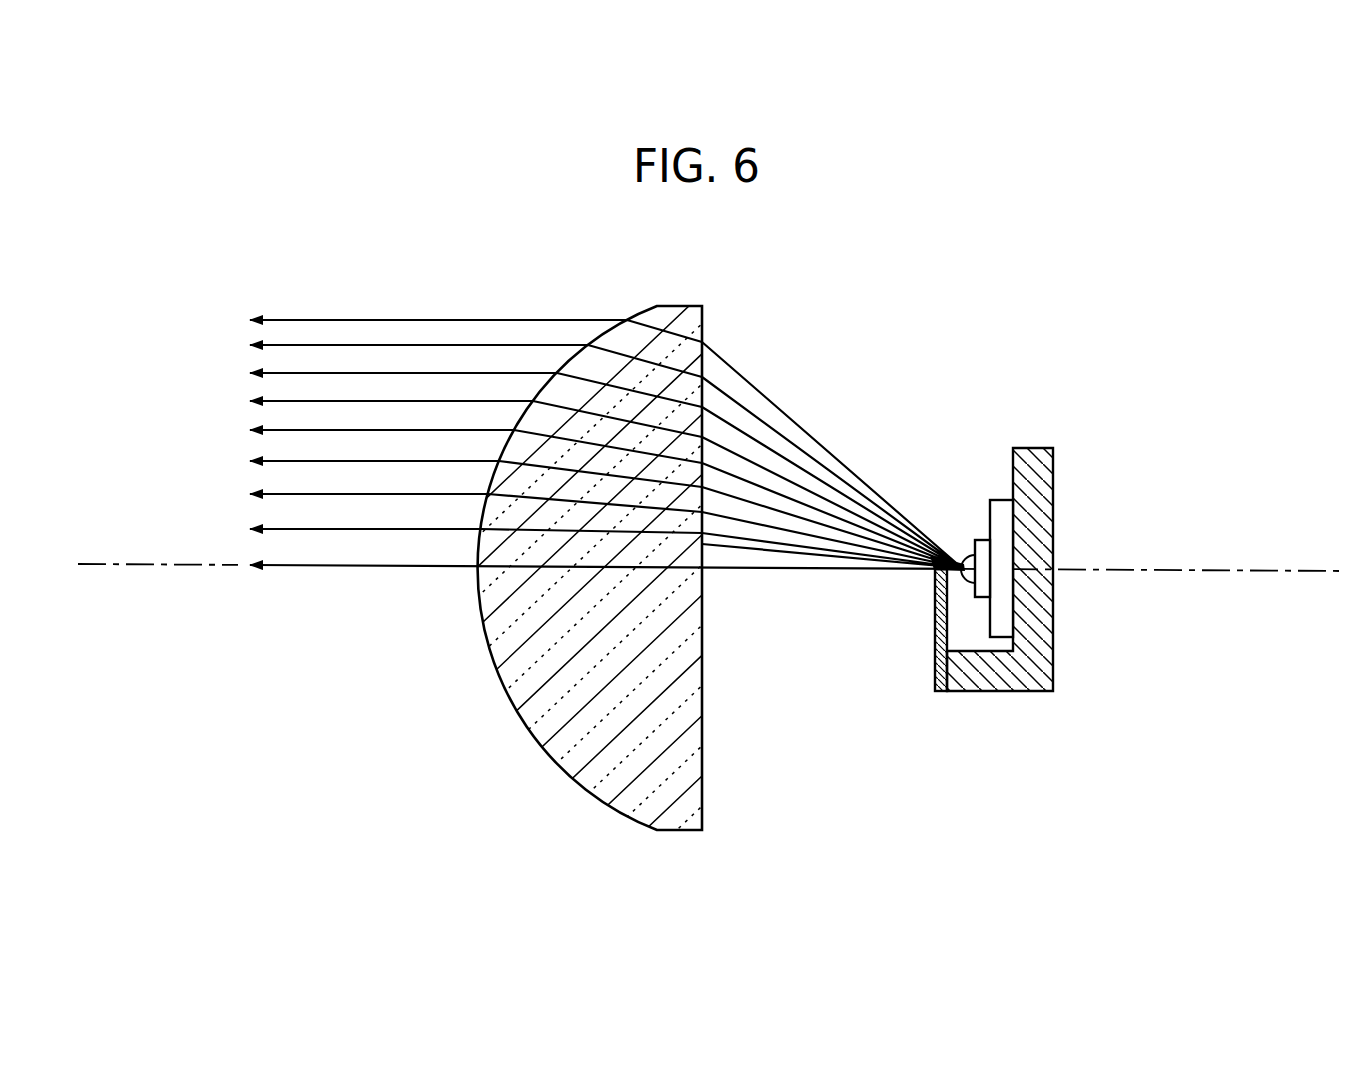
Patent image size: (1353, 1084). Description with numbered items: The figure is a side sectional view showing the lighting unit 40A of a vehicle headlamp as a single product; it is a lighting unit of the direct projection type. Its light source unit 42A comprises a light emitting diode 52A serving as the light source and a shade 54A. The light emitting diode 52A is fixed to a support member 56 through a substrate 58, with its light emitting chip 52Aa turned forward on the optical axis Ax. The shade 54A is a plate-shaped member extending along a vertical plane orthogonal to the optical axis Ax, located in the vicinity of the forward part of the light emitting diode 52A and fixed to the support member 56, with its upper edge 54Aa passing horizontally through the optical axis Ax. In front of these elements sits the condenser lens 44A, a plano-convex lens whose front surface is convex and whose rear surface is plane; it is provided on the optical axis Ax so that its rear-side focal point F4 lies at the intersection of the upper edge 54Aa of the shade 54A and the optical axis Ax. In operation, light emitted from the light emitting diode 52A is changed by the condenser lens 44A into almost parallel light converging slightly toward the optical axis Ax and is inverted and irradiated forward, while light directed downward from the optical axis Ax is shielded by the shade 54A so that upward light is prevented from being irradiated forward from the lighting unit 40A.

The lighting unit 40A is at (1058, 294).
The light source unit 42A is at (897, 366).
The condenser lens 44A is at (602, 320).
The light emitting diode 52A is at (967, 604).
The light emitting chip 52Aa is at (964, 553).
The shade 54A is at (928, 628).
The upper edge 54Aa is at (946, 566).
The support member 56 is at (1060, 625).
The substrate 58 is at (1021, 530).
The focal point F4 is at (888, 567).
The optical axis Ax is at (178, 564).